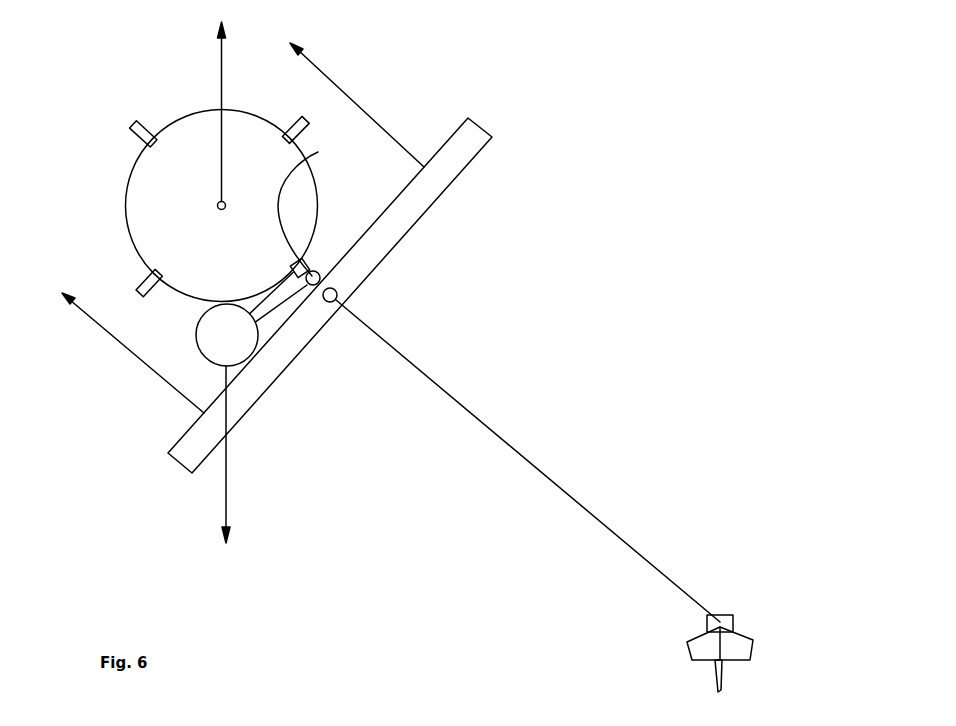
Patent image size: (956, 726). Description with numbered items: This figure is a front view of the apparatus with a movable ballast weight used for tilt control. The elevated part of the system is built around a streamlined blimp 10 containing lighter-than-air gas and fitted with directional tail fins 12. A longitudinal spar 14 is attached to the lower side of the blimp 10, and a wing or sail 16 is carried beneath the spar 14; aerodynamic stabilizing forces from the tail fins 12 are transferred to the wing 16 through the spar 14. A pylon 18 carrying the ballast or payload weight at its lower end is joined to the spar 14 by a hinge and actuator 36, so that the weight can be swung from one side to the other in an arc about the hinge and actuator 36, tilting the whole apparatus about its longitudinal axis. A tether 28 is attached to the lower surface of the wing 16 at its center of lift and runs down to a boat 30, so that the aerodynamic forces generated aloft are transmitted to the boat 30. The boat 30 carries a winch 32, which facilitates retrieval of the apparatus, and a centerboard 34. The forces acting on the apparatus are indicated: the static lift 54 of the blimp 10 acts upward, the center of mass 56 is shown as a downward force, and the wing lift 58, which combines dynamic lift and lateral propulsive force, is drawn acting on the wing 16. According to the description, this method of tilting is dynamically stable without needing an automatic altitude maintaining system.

The blimp 10 is at (162, 198).
The directional tail fins 12 is at (133, 128).
The spar 14 is at (298, 164).
The wing or sail 16 is at (348, 273).
The pylon 18 is at (275, 302).
The tether 28 is at (592, 513).
The boat 30 is at (735, 650).
The winch 32 is at (722, 623).
The centerboard 34 is at (723, 672).
The hinge and actuator 36 is at (316, 271).
The static lift 54 is at (220, 80).
The center of mass 56 is at (226, 480).
The wing lift 58 is at (335, 82).